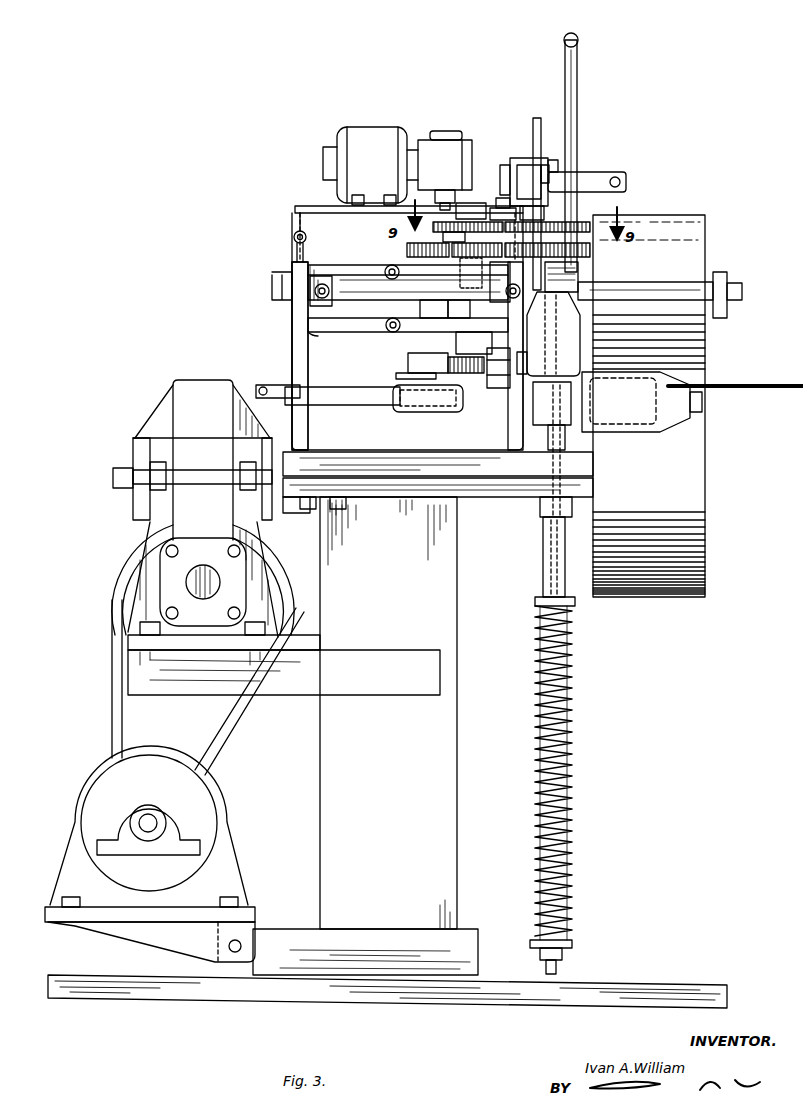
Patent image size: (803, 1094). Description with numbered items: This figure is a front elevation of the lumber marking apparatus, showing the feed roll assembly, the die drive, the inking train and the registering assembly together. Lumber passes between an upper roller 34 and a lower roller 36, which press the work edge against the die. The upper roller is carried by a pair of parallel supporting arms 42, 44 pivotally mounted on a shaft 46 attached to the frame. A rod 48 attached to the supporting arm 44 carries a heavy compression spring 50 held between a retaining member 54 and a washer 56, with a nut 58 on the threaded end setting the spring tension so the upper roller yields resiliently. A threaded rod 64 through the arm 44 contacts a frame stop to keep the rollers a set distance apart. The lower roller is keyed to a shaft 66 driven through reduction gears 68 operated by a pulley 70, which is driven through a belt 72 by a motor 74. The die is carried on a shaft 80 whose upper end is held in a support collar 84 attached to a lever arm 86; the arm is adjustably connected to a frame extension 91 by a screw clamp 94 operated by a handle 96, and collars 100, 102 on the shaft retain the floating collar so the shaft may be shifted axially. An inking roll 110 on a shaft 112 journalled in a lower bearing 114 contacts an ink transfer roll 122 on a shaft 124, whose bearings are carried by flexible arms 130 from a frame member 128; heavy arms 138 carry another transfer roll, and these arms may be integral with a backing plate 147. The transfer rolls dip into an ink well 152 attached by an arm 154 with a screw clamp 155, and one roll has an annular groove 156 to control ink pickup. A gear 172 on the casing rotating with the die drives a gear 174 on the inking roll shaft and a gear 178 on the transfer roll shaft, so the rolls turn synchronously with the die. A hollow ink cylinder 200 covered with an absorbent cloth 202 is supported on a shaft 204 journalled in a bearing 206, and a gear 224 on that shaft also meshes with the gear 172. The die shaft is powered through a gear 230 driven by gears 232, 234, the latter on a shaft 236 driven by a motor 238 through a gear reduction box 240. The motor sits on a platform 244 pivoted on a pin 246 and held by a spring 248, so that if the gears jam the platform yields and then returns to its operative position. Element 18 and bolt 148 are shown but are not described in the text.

The cutting wire 18 is at (785, 386).
The upper roller 34 is at (705, 215).
The lower roller 36 is at (705, 597).
The supporting arm 42 is at (722, 272).
The supporting arm 44 is at (580, 284).
The shaft 46 is at (652, 283).
The rod 48 is at (556, 968).
The compression spring 50 is at (570, 930).
The retaining member 54 is at (543, 572).
The washer 56 is at (572, 946).
The nut 58 is at (562, 954).
The rod 64 is at (578, 86).
The shaft 66 is at (578, 500).
The reduction gears 68 is at (232, 380).
The pulley 70 is at (116, 538).
The belt 72 is at (110, 726).
The motor 74 is at (215, 806).
The shaft 80 is at (530, 158).
The support collar 84 is at (508, 165).
The lever arm 86 is at (556, 160).
The extension 91 is at (545, 108).
The screw clamp 94 is at (592, 172).
The handle 96 is at (626, 184).
The collar 100 is at (547, 164).
The collar 102 is at (544, 208).
The inking roll 110 is at (466, 374).
The shaft 112 is at (465, 316).
The lower bearing 114 is at (468, 332).
The ink transfer roll 122 is at (408, 360).
The shaft 124 is at (424, 310).
The frame member 128 is at (292, 335).
The flexible arms 130 is at (366, 326).
The arms 138 is at (338, 263).
The backing plate 147 is at (314, 336).
The mounting bolts 148 is at (386, 268).
The ink well 152 is at (460, 412).
The arm 154 is at (348, 405).
The screw clamp 155 is at (276, 385).
The annular groove 156 is at (408, 378).
The gear 172 is at (590, 253).
The gear 174 is at (478, 270).
The gear 178 is at (407, 251).
The hollow cylinder 200 is at (498, 388).
The absorbent cloth 202 is at (527, 360).
The shaft 204 is at (540, 330).
The bearing 206 is at (495, 280).
The gear 224 is at (462, 258).
The gear 230 is at (582, 221).
The gear 232 is at (470, 221).
The gear 234 is at (448, 232).
The shaft 236 is at (460, 205).
The motor 238 is at (352, 143).
The gear reduction box 240 is at (456, 147).
The platform 244 is at (318, 206).
The pin 246 is at (500, 203).
The spring 248 is at (294, 237).